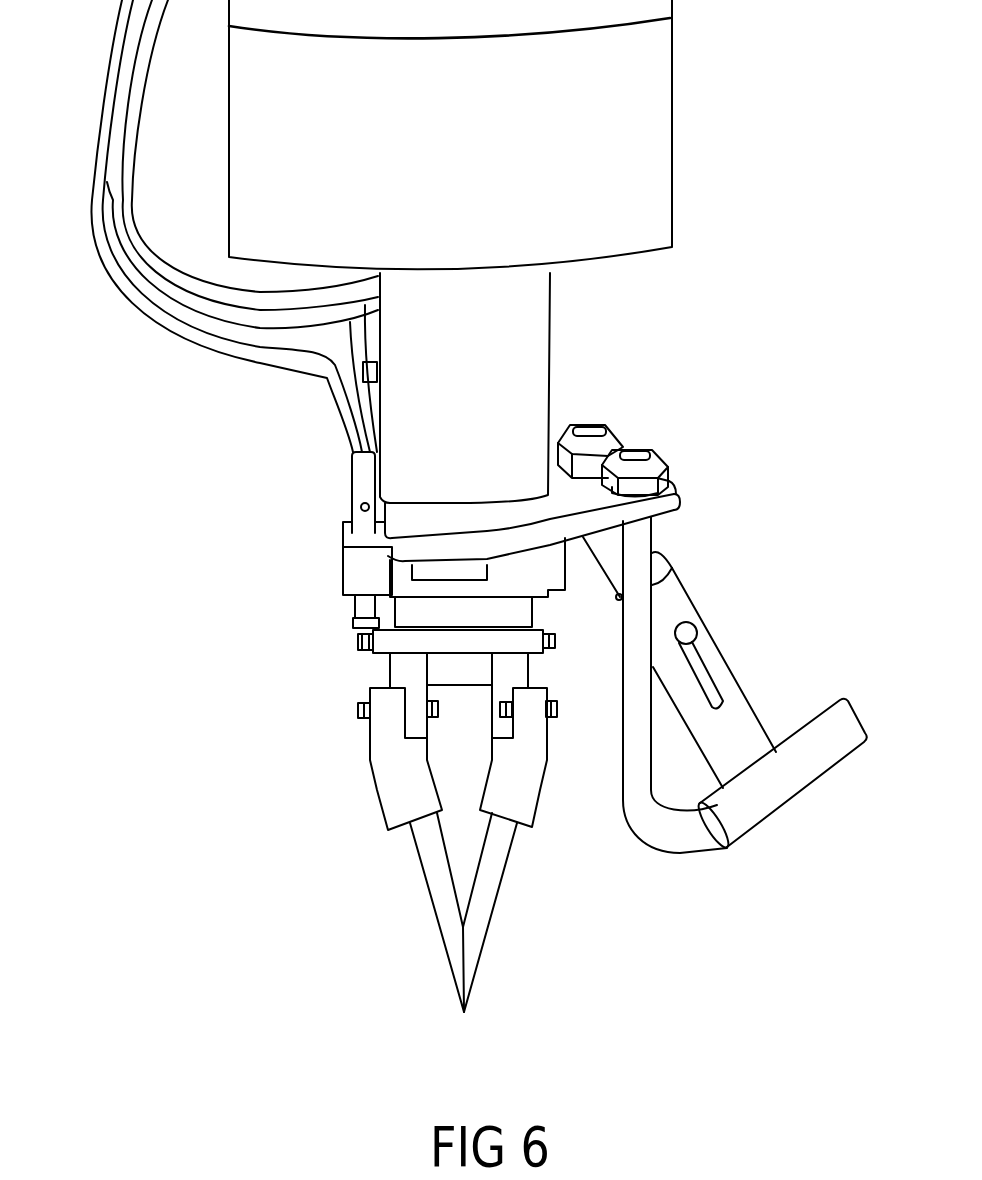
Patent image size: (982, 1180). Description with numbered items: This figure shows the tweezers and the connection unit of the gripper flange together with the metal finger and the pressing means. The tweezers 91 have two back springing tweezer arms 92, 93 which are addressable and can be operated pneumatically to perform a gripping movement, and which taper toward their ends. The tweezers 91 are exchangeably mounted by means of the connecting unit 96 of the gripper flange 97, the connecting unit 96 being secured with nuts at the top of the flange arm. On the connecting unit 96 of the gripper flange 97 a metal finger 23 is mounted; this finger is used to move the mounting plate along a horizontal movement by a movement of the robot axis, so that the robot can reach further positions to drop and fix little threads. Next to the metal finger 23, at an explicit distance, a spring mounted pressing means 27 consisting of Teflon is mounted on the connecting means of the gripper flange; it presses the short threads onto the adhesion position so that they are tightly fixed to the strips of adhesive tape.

The metal finger 23 is at (823, 790).
The spring mounted pressing means 27 is at (737, 643).
The tweezers 91 is at (330, 882).
The back springing tweezer arm 92 is at (445, 920).
The back springing tweezer arm 93 is at (480, 918).
The connecting unit 96 is at (673, 423).
The gripper flange 97 is at (337, 637).